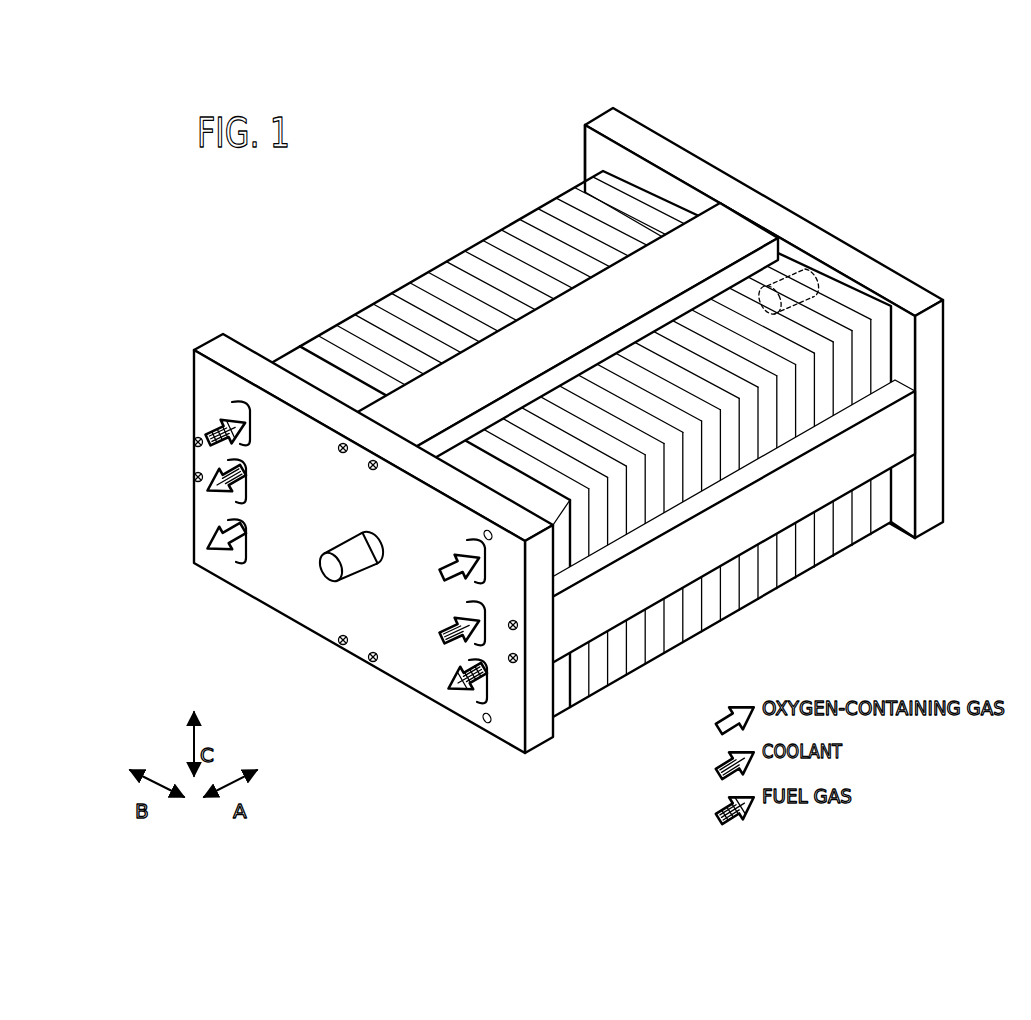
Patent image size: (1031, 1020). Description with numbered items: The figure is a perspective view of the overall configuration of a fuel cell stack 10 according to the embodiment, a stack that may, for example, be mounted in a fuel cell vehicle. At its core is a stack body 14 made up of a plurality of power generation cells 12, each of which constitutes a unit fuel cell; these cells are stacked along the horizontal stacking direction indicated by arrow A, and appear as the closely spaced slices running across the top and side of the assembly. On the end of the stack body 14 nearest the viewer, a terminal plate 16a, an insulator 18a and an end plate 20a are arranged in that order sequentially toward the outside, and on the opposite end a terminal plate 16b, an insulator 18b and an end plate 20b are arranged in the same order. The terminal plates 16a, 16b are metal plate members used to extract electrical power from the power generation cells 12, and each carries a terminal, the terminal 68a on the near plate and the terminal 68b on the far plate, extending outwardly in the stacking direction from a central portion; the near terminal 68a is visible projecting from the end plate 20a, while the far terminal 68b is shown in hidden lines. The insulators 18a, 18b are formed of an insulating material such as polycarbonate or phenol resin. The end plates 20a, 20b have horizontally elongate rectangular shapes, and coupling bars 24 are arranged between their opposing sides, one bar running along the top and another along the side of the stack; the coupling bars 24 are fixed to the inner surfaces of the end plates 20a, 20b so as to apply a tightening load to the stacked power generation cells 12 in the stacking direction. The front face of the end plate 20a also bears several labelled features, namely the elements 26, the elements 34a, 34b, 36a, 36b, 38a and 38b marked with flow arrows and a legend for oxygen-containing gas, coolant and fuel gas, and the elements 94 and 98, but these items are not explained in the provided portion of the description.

The fuel cell stack 10 is at (278, 212).
The power generation cell 12 is at (423, 205).
The stack body 14 is at (582, 444).
The terminal plate 16a is at (318, 400).
The terminal plate 16b is at (637, 217).
The insulator 18a is at (281, 360).
The insulator 18b is at (623, 190).
The end plate 20a is at (192, 368).
The end plate 20b is at (920, 279).
The coupling bar 24 is at (737, 230).
The bolt 26 is at (340, 453).
The oxygen-containing gas supply passage 34a is at (468, 540).
The oxygen-containing gas discharge passage 34b is at (238, 527).
The coolant supply passage 36a is at (477, 633).
The coolant discharge passage 36b is at (238, 478).
The fuel gas supply passage 38a is at (242, 408).
The fuel gas discharge passage 38b is at (473, 698).
The terminal 68a is at (326, 567).
The terminal 68b is at (810, 282).
The screw 94 is at (490, 541).
The screw 98 is at (486, 724).